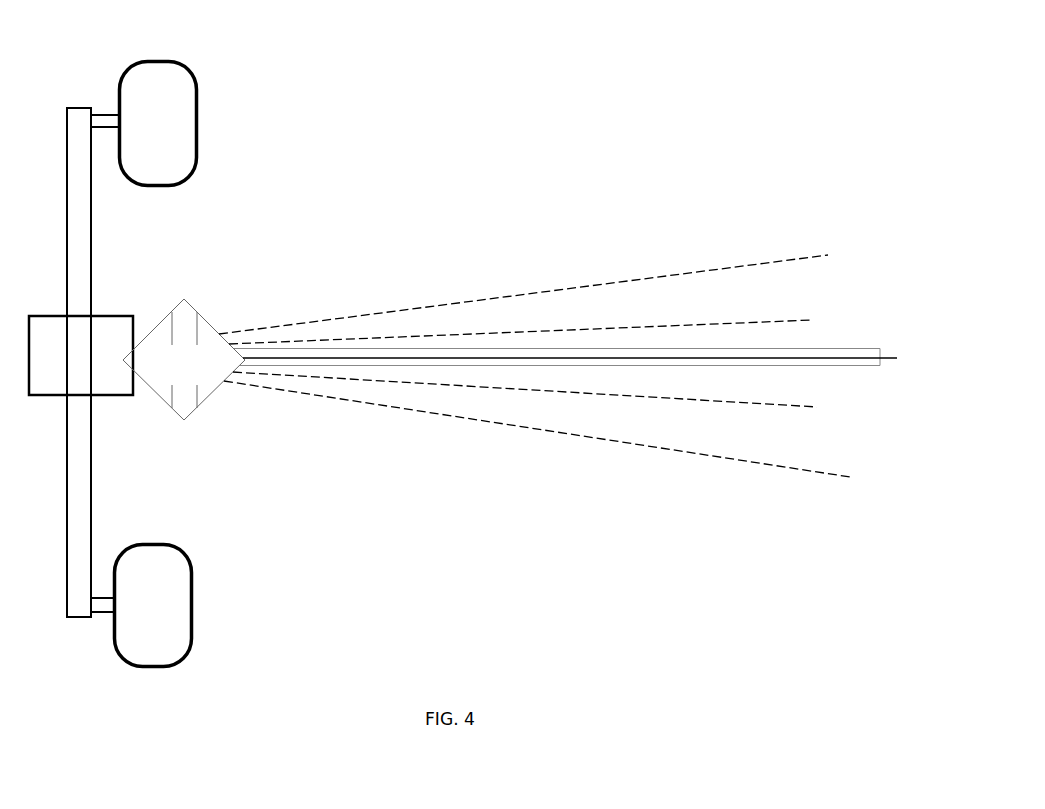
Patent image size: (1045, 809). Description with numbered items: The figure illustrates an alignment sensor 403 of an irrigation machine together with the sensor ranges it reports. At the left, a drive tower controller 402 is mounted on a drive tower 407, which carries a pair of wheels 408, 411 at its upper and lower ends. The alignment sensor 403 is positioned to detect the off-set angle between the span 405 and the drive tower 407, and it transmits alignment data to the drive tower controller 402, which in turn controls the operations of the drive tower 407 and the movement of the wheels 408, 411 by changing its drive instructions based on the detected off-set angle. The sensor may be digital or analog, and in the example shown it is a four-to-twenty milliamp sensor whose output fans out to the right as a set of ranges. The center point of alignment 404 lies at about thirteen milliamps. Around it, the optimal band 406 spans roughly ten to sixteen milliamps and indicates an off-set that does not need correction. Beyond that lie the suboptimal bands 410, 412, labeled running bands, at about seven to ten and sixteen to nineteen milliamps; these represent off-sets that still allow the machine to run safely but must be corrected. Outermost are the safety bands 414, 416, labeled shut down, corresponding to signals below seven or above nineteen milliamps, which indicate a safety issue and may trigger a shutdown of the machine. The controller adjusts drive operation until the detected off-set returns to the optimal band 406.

The drive tower controller 402 is at (118, 330).
The alignment sensor 403 is at (190, 313).
The center point of alignment 404 is at (623, 360).
The span 405 is at (390, 365).
The optimal band 406 is at (760, 337).
The drive tower 407 is at (168, 347).
The wheel 408 is at (140, 103).
The suboptimal band 410 is at (613, 305).
The wheel 411 is at (146, 636).
The suboptimal band 412 is at (672, 435).
The safety band 414 is at (445, 471).
The safety band 416 is at (463, 242).